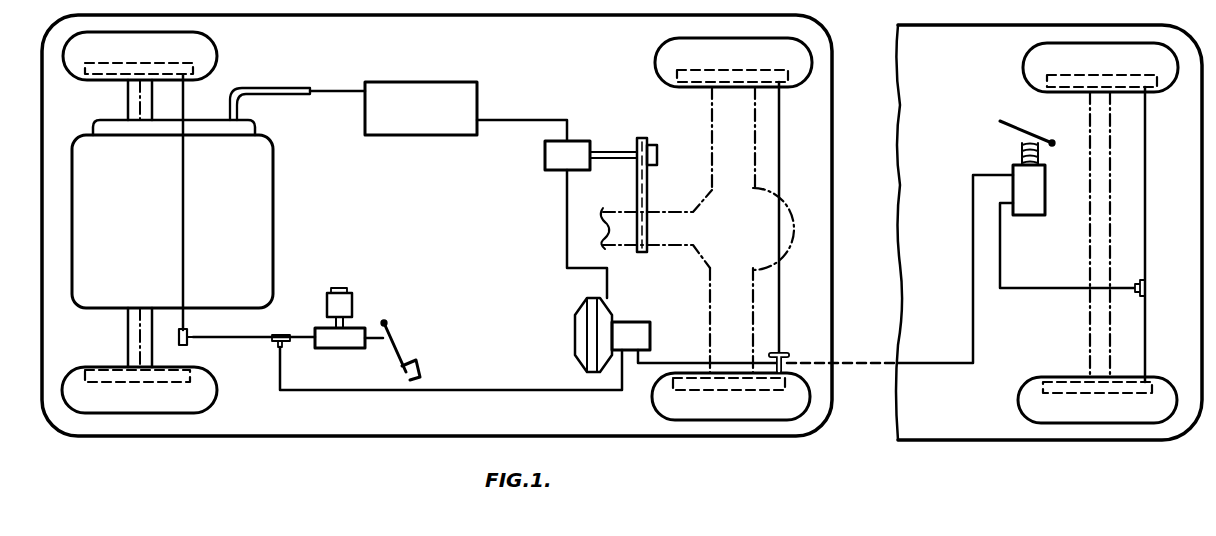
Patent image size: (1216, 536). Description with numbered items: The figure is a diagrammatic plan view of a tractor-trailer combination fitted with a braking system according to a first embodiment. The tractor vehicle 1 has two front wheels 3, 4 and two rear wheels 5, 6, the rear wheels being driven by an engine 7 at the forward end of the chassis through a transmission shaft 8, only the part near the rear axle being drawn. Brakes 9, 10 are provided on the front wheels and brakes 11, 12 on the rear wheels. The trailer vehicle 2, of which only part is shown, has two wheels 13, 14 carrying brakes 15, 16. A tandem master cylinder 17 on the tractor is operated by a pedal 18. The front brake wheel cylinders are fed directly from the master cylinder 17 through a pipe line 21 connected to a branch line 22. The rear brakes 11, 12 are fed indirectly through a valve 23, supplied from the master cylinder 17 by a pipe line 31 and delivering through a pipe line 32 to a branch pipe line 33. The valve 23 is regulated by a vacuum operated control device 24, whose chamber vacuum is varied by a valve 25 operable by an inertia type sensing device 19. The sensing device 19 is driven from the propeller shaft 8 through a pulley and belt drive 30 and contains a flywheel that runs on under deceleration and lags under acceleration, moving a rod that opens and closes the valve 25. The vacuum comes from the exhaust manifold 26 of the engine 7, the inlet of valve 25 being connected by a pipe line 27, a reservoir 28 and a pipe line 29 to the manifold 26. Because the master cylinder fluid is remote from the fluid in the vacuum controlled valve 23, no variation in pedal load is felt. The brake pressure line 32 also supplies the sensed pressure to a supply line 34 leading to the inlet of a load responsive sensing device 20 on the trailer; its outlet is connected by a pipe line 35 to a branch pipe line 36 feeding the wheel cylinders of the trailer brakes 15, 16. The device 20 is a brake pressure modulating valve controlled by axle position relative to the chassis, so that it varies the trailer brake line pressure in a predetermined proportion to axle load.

The tractor vehicle 1 is at (369, 439).
The trailer vehicle 2 is at (928, 442).
The front wheel 3 is at (212, 58).
The front wheel 4 is at (200, 402).
The rear wheel 5 is at (660, 62).
The rear wheel 6 is at (665, 405).
The engine 7 is at (262, 262).
The transmission shaft 8 is at (668, 212).
The brake 9 is at (108, 72).
The brake 10 is at (102, 374).
The brake 11 is at (786, 82).
The brake 12 is at (788, 390).
The trailer wheel 13 is at (1032, 60).
The trailer wheel 14 is at (1025, 400).
The brake 15 is at (1150, 87).
The brake 16 is at (1148, 386).
The tandem master cylinder 17 is at (330, 328).
The pedal 18 is at (395, 347).
The inertia type sensing device 19 is at (653, 143).
The load responsive sensing device 20 is at (1010, 165).
The pipe line 21 is at (230, 340).
The branch line 22 is at (183, 214).
The valve 23 is at (632, 322).
The vacuum operated control device 24 is at (590, 328).
The valve 25 is at (545, 152).
The exhaust manifold 26 is at (300, 93).
The pipe line 27 is at (536, 121).
The reservoir 28 is at (415, 135).
The pipe line 29 is at (330, 91).
The pulley and belt drive 30 is at (636, 192).
The pipe line 31 is at (513, 395).
The pipe line 32 is at (664, 360).
The branch pipe line 33 is at (777, 222).
The supply line 34 is at (785, 358).
The pipe line 35 is at (1003, 270).
The branch pipe line 36 is at (1145, 248).